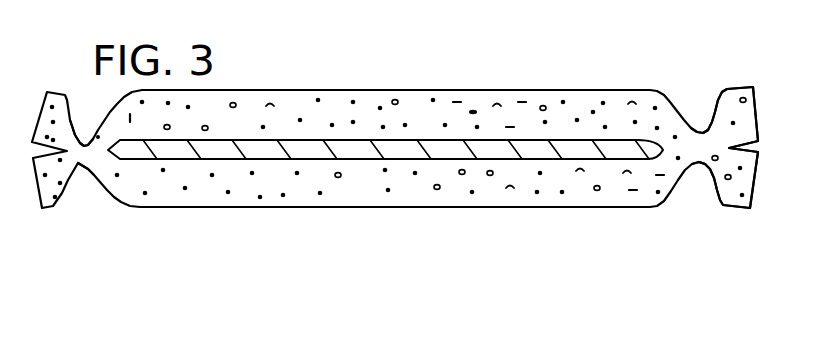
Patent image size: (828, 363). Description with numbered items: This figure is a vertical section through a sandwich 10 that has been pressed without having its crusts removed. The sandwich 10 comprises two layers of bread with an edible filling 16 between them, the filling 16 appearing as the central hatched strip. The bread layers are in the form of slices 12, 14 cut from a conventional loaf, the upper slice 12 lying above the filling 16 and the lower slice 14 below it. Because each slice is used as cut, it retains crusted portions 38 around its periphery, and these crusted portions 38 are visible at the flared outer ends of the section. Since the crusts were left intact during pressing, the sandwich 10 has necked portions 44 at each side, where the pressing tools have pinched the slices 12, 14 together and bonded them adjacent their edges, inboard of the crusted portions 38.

The sandwich 10 is at (619, 89).
The slice 12 is at (413, 102).
The slice 14 is at (345, 193).
The edible filling 16 is at (450, 153).
The crusted portions 38 is at (743, 118).
The necked portions 44 is at (83, 170).